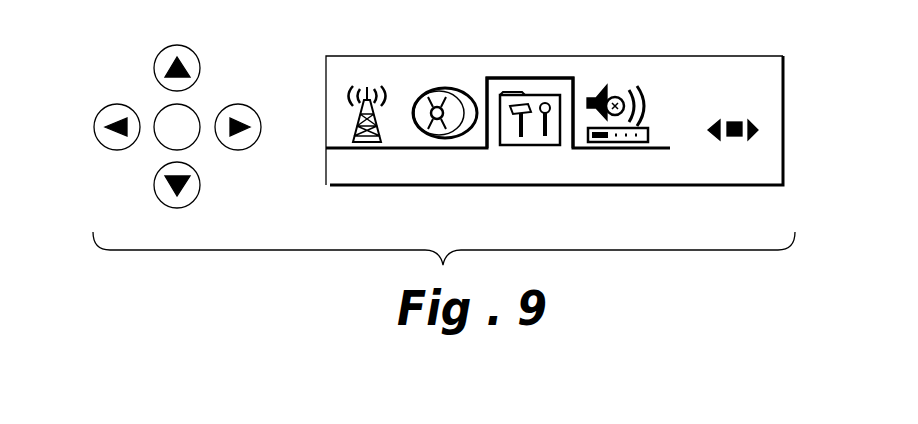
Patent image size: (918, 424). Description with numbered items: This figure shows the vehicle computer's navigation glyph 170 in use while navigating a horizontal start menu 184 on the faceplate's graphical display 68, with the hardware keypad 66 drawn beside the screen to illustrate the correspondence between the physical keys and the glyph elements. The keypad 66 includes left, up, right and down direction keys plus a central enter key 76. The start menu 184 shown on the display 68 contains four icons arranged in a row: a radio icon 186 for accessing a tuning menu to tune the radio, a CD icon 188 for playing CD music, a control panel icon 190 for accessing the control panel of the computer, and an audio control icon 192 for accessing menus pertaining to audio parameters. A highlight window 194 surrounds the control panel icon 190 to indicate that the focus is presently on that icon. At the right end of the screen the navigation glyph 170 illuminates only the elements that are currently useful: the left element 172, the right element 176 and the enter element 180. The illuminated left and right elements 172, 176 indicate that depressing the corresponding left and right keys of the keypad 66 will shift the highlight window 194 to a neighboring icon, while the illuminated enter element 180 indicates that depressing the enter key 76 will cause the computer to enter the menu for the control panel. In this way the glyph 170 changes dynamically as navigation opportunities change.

The keypad 66 is at (123, 63).
The enter key 76 is at (192, 142).
The graphical display 68 is at (556, 52).
The horizontal start menu 184 is at (728, 72).
The radio icon 186 is at (370, 70).
The CD icon 188 is at (435, 90).
The control panel icon 190 is at (507, 93).
The audio control icon 192 is at (637, 83).
The highlight window 194 is at (545, 78).
The left element 172 is at (713, 117).
The enter element 180 is at (737, 120).
The right element 176 is at (757, 125).
The navigation glyph 170 is at (765, 155).